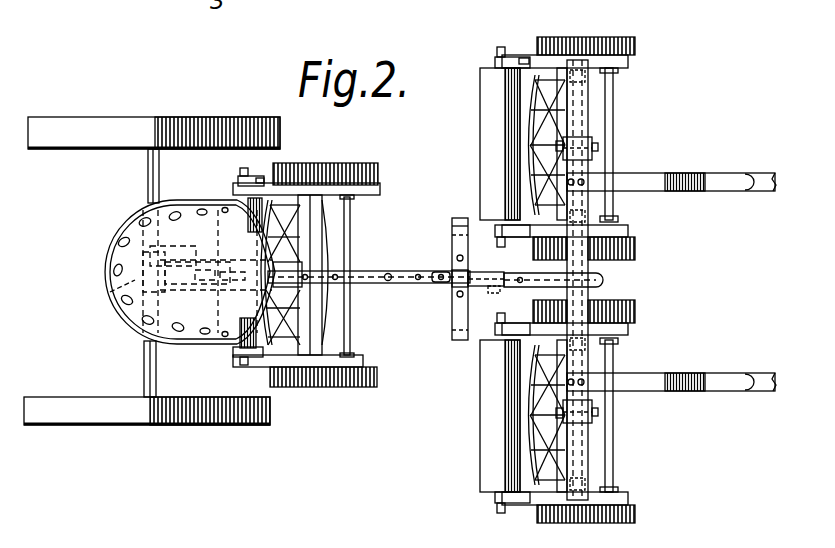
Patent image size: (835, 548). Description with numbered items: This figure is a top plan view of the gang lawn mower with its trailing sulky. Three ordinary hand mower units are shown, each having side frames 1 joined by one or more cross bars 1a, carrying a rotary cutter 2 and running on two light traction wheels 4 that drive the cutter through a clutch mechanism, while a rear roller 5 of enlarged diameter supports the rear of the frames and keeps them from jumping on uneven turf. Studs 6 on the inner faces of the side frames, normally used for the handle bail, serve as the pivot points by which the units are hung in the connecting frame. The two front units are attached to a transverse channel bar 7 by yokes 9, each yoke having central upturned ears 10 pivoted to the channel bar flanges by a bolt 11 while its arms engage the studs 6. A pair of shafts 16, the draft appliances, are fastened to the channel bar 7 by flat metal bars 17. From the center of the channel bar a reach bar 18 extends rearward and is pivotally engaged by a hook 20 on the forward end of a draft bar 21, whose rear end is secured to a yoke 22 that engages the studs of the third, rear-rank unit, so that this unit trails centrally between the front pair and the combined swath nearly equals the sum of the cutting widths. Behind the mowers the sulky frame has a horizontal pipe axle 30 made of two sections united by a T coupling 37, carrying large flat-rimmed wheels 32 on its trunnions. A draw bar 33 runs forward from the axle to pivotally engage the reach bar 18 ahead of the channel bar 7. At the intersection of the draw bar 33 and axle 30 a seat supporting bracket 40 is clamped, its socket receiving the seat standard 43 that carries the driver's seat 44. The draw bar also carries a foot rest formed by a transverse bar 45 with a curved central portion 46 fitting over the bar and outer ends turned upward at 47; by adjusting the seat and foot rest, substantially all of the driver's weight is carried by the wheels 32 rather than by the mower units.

The side frame 1 is at (375, 190).
The cross bar 1a is at (352, 208).
The rotary cutter 2 is at (280, 200).
The traction wheel 4 is at (355, 172).
The rear roller 5 is at (262, 348).
The stud 6 is at (317, 196).
The channel bar 7 is at (580, 297).
The yoke 9 is at (578, 125).
The upturned ear 10 is at (592, 160).
The bolt 11 is at (598, 148).
The shaft 16 is at (757, 192).
The flat metal bar 17 is at (668, 192).
The reach bar 18 is at (495, 292).
The hook 20 is at (442, 284).
The draft bar 21 is at (392, 284).
The yoke 22 is at (325, 335).
The axle 30 is at (147, 173).
The wheel 32 is at (117, 126).
The draw bar 33 is at (380, 271).
The T coupling 37 is at (110, 293).
The seat supporting bracket 40 is at (196, 252).
The seat standard 43 is at (273, 280).
The driver's seat 44 is at (124, 256).
The transverse bar 45 is at (455, 230).
The curved central portion 46 is at (470, 281).
The upturned end 47 is at (460, 218).